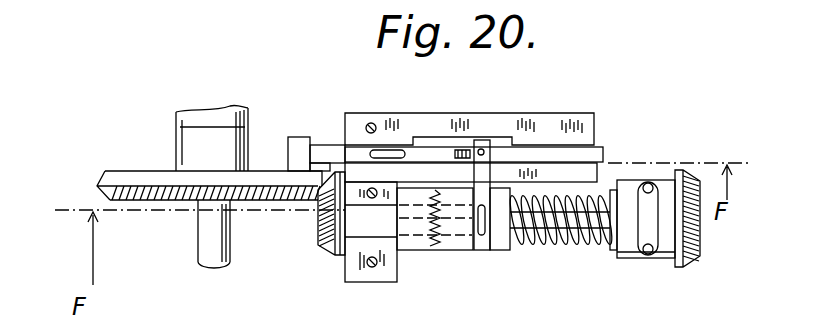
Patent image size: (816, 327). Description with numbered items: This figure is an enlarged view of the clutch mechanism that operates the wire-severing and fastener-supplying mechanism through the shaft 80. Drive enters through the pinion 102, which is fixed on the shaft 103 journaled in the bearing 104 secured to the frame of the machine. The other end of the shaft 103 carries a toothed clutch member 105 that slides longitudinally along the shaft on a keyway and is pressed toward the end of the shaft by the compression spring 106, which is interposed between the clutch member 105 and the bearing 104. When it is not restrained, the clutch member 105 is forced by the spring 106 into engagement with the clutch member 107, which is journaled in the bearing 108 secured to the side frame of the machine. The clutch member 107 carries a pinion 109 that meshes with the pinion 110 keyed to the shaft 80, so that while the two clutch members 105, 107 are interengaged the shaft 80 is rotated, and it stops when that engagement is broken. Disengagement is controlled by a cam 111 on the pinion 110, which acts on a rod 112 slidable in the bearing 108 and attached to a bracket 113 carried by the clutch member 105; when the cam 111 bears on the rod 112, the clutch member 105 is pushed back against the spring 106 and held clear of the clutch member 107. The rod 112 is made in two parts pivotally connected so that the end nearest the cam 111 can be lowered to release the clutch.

The shaft 80 is at (211, 253).
The pinion 102 is at (693, 265).
The shaft 103 is at (584, 248).
The bearing 104 is at (633, 257).
The toothed clutch member 105 is at (463, 252).
The compression spring 106 is at (551, 247).
The clutch member 107 is at (418, 252).
The bearing 108 is at (367, 280).
The pinion 109 is at (317, 247).
The pinion 110 is at (105, 178).
The cam 111 is at (294, 137).
The rod 112 is at (334, 145).
The bracket 113 is at (480, 178).